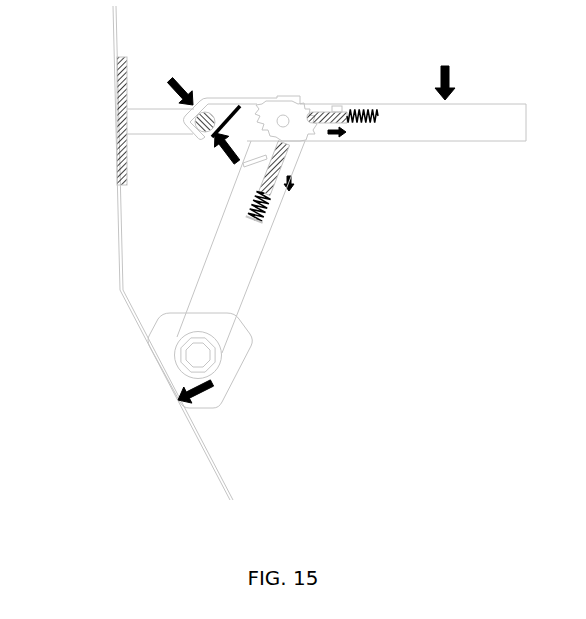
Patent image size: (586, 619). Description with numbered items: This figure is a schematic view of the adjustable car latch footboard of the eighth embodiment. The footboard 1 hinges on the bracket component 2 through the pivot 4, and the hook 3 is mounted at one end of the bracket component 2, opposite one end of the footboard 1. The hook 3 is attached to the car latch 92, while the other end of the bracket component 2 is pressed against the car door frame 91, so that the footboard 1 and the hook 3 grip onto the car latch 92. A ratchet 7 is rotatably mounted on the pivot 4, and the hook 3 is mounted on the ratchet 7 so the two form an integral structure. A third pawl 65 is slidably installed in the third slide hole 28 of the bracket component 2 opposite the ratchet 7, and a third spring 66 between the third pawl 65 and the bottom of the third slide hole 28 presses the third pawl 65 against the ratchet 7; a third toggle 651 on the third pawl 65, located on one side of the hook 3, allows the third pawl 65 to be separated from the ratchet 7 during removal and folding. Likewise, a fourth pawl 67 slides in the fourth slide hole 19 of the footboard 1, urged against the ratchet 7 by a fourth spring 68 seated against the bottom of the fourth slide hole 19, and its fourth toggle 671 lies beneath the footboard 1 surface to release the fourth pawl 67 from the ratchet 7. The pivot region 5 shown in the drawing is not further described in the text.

The footboard 1 is at (463, 125).
The bracket component 2 is at (225, 257).
The hook 3 is at (230, 98).
The pivot 4 is at (283, 120).
The pivot seat 5 is at (235, 378).
The ratchet 7 is at (260, 107).
The fourth slide hole 19 is at (383, 108).
The third slide hole 28 is at (250, 218).
The third pawl 65 is at (282, 163).
The third toggle 651 is at (247, 161).
The third spring 66 is at (272, 207).
The fourth pawl 67 is at (322, 114).
The fourth toggle 671 is at (337, 106).
The fourth spring 68 is at (373, 123).
The car door frame 91 is at (163, 392).
The car latch 92 is at (196, 119).